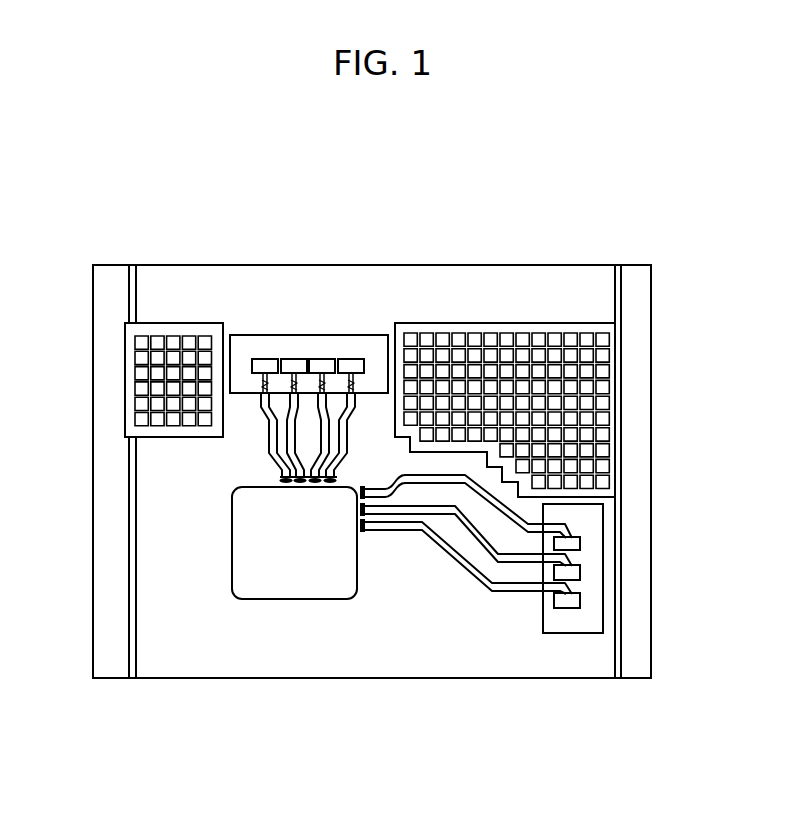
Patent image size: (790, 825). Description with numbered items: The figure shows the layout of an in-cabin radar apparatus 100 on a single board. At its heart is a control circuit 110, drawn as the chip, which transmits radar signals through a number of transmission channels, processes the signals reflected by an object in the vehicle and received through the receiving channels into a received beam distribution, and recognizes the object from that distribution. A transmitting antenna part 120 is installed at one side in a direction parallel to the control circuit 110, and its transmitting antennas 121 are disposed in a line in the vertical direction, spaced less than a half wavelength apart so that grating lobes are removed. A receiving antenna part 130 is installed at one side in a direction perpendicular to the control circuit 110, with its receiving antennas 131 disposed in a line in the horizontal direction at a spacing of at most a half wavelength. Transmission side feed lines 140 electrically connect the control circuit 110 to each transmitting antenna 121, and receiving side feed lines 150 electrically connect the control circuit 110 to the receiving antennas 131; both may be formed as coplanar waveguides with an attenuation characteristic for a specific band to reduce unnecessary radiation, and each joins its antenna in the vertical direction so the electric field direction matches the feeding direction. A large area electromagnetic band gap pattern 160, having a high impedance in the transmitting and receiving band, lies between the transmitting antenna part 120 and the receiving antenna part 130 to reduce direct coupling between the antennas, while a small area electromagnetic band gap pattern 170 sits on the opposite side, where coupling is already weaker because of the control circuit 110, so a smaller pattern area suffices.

The in-cabin radar apparatus 100 is at (479, 244).
The control circuit 110 is at (292, 585).
The transmitting antenna part 120 is at (626, 568).
The transmitting antenna 121 is at (582, 542).
The receiving antenna part 130 is at (309, 308).
The receiving antenna 131 is at (328, 362).
The transmission side feed line 140 is at (512, 588).
The receiving side feed line 150 is at (267, 437).
The large area electromagnetic band gap pattern 160 is at (613, 412).
The small area electromagnetic band gap pattern 170 is at (130, 383).